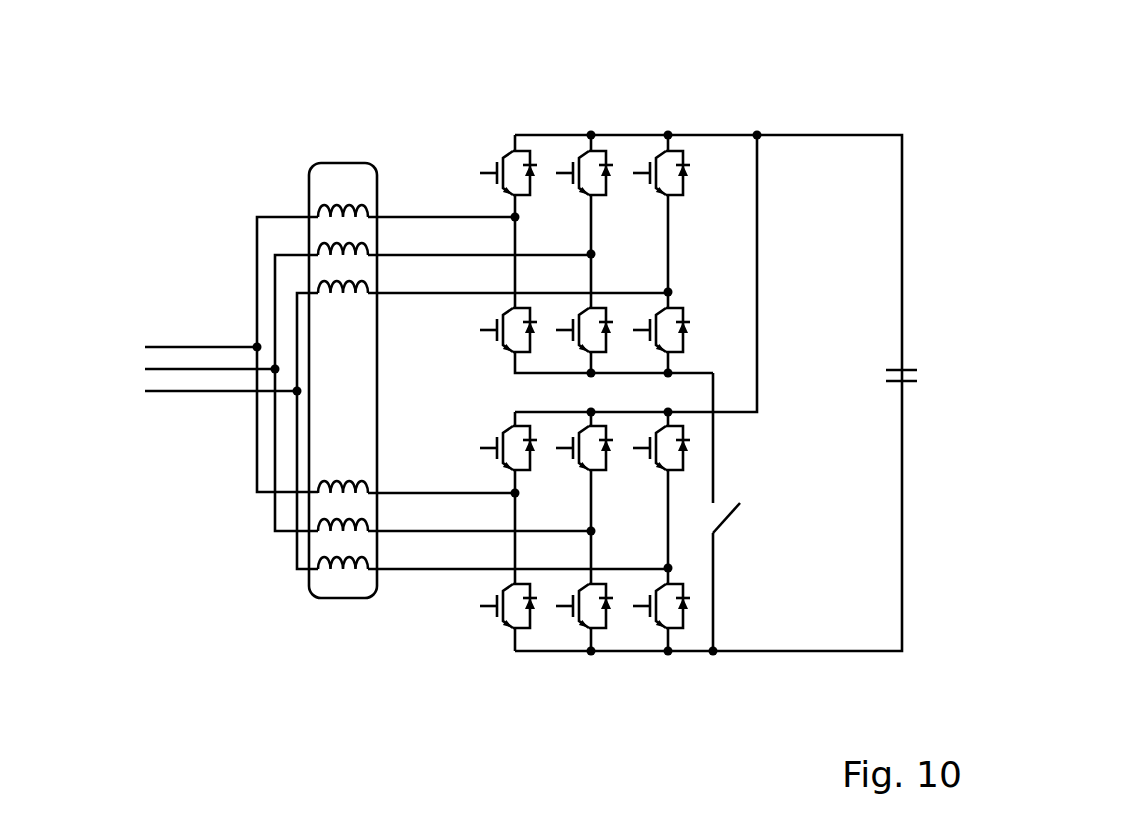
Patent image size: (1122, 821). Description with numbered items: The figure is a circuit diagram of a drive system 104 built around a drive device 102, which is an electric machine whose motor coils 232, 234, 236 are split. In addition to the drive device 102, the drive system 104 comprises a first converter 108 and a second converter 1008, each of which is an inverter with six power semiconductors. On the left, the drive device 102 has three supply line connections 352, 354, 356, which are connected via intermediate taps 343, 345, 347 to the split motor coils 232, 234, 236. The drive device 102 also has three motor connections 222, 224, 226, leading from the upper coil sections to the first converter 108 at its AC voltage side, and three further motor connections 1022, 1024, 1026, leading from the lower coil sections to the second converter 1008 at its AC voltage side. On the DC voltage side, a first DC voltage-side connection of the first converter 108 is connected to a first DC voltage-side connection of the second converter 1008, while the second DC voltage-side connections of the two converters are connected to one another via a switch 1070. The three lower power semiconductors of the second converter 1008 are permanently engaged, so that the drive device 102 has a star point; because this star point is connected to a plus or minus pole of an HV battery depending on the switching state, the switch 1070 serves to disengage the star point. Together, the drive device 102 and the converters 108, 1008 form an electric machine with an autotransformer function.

The drive device 102 is at (307, 610).
The drive system 104 is at (187, 660).
The first converter 108 is at (680, 237).
The motor connection 222 is at (379, 217).
The motor connection 224 is at (379, 255).
The motor connection 226 is at (379, 293).
The motor coil 232 is at (338, 195).
The motor coil 234 is at (322, 232).
The motor coil 236 is at (332, 277).
The intermediate tap 343 is at (257, 347).
The intermediate tap 345 is at (275, 369).
The intermediate tap 347 is at (297, 391).
The supply line connection 352 is at (178, 347).
The supply line connection 354 is at (182, 369).
The supply line connection 356 is at (182, 391).
The second converter 1008 is at (747, 573).
The further motor connection 1022 is at (377, 493).
The further motor connection 1024 is at (377, 532).
The further motor connection 1026 is at (377, 570).
The switch 1070 is at (733, 513).